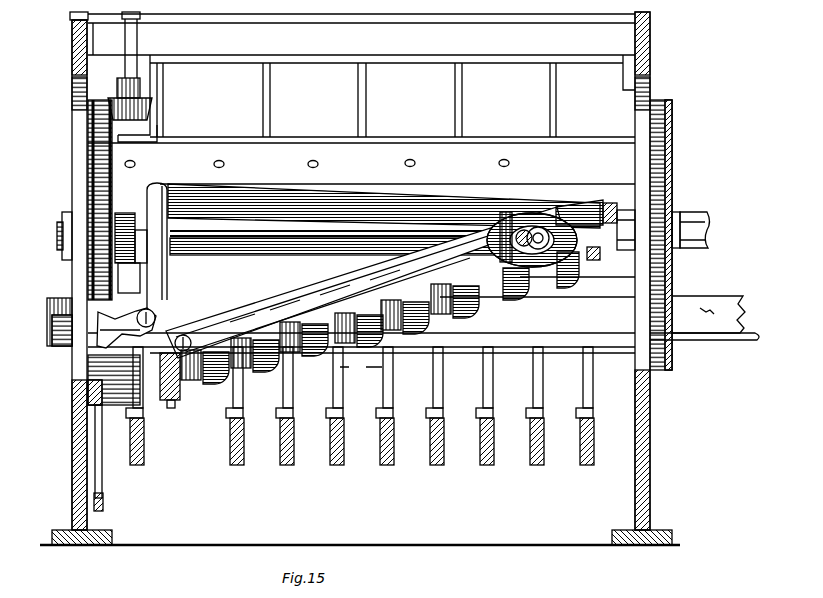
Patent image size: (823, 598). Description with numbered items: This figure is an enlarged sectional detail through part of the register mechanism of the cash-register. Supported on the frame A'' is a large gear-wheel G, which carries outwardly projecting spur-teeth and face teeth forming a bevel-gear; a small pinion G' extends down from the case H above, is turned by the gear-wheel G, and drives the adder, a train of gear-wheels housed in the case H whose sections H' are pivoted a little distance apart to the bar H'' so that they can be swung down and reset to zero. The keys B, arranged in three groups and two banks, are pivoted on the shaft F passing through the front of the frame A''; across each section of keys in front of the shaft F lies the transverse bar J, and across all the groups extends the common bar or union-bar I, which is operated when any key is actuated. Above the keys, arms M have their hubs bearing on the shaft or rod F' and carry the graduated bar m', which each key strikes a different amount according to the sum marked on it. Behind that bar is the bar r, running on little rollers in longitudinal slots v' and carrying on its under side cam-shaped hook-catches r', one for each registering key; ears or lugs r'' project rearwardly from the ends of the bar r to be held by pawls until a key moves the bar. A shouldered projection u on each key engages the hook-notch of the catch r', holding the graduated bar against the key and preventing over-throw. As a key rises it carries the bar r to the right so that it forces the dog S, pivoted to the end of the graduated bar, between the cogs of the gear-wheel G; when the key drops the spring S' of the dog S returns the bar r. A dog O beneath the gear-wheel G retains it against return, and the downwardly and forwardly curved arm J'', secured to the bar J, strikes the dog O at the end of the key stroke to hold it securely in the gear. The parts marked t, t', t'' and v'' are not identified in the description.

The case H is at (361, 27).
The casing sections H' is at (361, 99).
The bar H'' is at (380, 168).
The frame A'' is at (361, 278).
The gear-wheel G is at (375, 235).
The small pinion G' is at (151, 77).
The graduated bar m' is at (384, 196).
The arms M is at (183, 250).
The dog S is at (105, 342).
The spring S' is at (161, 250).
The bar r is at (363, 282).
The hook-catches r' is at (380, 322).
The ears or lugs r'' is at (93, 361).
The block t is at (579, 205).
The hatched block t' is at (164, 385).
The end block t'' is at (611, 204).
The projection u is at (128, 421).
The longitudinal slots v' is at (523, 215).
The cam pin v'' is at (532, 226).
The shaft F is at (704, 347).
The shaft or rod F' is at (700, 224).
The common bar I is at (713, 302).
The transverse bar J is at (537, 280).
The curved arm J'' is at (108, 458).
The keys B is at (361, 368).
The dog O is at (95, 392).